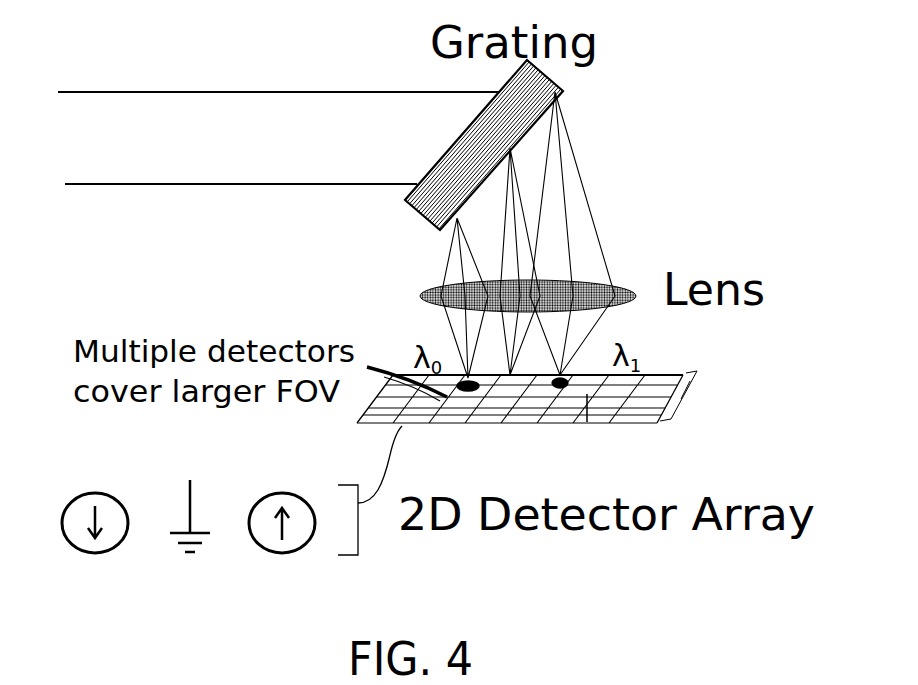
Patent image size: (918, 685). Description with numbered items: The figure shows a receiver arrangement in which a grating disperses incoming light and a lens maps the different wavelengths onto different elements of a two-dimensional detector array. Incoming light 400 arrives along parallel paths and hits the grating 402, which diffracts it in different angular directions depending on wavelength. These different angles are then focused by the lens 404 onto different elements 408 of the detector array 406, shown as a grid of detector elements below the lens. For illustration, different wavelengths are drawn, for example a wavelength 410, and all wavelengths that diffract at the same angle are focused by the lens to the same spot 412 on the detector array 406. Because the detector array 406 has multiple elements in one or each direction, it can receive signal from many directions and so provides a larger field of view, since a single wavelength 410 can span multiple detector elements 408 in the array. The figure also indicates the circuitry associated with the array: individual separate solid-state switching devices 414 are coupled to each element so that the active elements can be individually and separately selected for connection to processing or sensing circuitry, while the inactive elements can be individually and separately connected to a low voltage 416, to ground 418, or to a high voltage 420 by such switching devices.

The incoming light 400 is at (279, 138).
The grating 402 is at (533, 145).
The lens 404 is at (590, 321).
The detector array 406 is at (697, 383).
The elements 408 is at (578, 433).
The wavelength 410 is at (495, 327).
The spot 412 is at (472, 387).
The solid-state switching devices 414 is at (365, 427).
The low voltage 416 is at (128, 598).
The ground 418 is at (225, 598).
The high voltage 420 is at (327, 598).